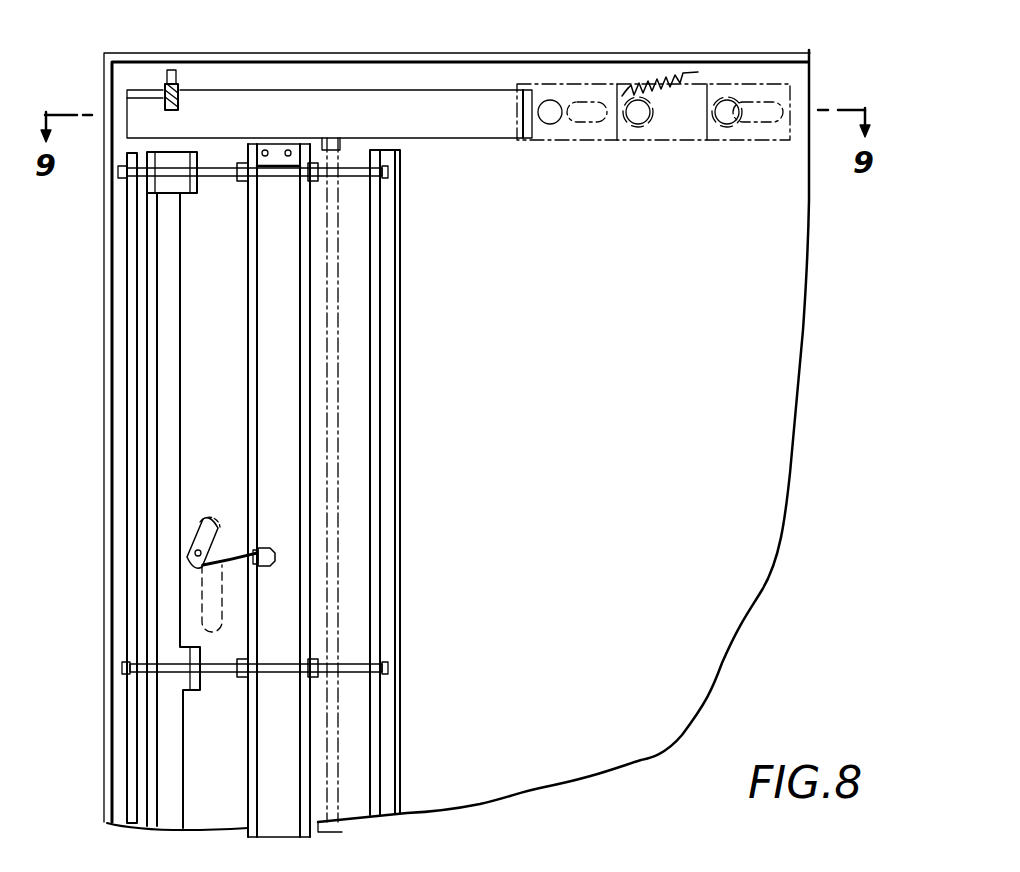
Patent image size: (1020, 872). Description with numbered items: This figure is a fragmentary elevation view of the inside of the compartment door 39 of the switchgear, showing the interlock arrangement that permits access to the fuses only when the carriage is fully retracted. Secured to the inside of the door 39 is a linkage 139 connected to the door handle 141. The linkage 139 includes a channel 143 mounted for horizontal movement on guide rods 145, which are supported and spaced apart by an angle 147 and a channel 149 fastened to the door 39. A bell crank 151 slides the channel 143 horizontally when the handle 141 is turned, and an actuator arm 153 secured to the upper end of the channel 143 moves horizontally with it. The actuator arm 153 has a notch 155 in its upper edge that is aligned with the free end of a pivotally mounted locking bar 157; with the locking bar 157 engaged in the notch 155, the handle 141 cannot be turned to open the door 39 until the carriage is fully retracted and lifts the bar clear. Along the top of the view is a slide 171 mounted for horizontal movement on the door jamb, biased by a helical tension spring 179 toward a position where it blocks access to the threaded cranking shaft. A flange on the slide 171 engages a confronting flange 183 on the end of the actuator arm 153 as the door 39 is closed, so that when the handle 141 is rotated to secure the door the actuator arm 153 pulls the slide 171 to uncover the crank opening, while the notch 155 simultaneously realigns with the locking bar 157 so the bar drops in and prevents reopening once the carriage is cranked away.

The door 39 is at (795, 334).
The linkage 139 is at (88, 343).
The door handle 141 is at (198, 612).
The channel 143 is at (290, 322).
The guide rods 145 is at (355, 173).
The angle 147 is at (385, 243).
The channel 149 is at (168, 706).
The bell crank 151 is at (190, 541).
The actuator arm 153 is at (316, 79).
The notch 155 is at (180, 110).
The locking bar 157 is at (166, 95).
The slide 171 is at (678, 127).
The helical tension spring 179 is at (665, 77).
The confronting flange 183 is at (527, 92).